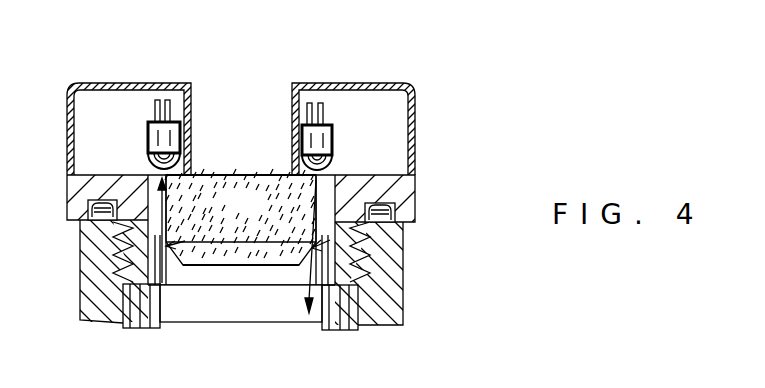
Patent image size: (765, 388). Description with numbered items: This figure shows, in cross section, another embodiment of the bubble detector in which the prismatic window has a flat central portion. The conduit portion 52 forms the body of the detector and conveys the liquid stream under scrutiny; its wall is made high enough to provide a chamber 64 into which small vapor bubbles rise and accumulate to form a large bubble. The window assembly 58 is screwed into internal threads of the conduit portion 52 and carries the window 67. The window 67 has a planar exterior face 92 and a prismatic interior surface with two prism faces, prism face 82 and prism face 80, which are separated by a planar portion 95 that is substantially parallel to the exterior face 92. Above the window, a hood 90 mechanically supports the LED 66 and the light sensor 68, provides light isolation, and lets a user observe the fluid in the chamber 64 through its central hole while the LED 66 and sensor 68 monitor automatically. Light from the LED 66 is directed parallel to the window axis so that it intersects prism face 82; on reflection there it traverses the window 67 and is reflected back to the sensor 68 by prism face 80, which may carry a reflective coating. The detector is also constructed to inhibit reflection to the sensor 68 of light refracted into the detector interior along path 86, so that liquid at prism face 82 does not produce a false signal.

The conduit portion 52 is at (378, 320).
The window assembly 58 is at (417, 194).
The chamber 64 is at (333, 257).
The LED 66 is at (333, 142).
The window 67 is at (240, 217).
The light sensor 68 is at (150, 140).
The prism face 80 is at (150, 247).
The prism face 82 is at (320, 246).
The path 86 is at (308, 314).
The hood 90 is at (390, 87).
The planar exterior face 92 is at (265, 175).
The planar portion 95 is at (255, 267).